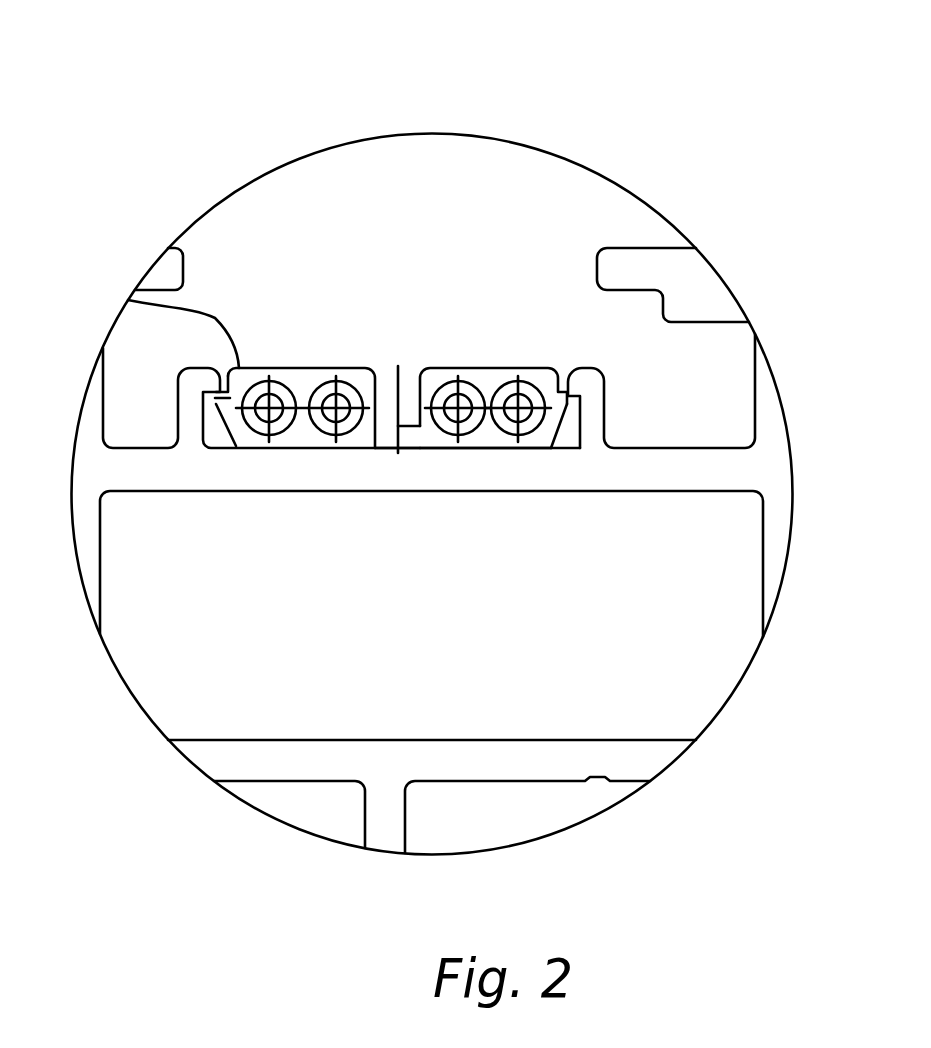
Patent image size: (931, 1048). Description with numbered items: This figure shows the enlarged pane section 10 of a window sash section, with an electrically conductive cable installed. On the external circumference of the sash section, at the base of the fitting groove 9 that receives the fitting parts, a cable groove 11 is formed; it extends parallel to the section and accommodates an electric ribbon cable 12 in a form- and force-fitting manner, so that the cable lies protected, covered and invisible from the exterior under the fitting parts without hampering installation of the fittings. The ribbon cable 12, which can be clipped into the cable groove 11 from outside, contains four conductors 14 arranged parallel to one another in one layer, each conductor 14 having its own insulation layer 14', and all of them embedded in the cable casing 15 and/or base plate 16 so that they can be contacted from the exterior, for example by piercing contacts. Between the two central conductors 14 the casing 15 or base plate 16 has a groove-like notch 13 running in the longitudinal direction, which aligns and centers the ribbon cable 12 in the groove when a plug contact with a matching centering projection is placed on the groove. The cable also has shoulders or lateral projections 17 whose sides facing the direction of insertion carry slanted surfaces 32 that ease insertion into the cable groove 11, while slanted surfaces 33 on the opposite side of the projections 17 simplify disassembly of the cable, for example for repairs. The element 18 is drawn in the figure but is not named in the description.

The fitting groove 9 is at (415, 192).
The pane section 10 is at (203, 776).
The cable groove 11 is at (410, 390).
The ribbon cable 12 is at (490, 388).
The groove-like notch 13 is at (380, 400).
The conductors 14 is at (396, 263).
The insulation layer 14' is at (336, 247).
The cable casing 15 is at (487, 437).
The base plate 16 is at (128, 300).
The lateral projections 17 is at (220, 414).
The web 18 is at (383, 440).
The inclined surfaces 32 is at (228, 440).
The inclined surfaces 33 is at (612, 393).